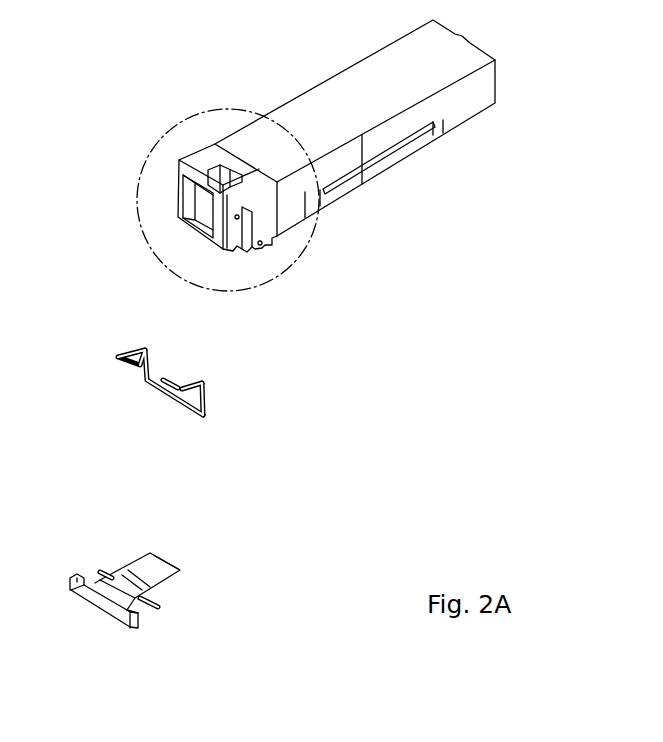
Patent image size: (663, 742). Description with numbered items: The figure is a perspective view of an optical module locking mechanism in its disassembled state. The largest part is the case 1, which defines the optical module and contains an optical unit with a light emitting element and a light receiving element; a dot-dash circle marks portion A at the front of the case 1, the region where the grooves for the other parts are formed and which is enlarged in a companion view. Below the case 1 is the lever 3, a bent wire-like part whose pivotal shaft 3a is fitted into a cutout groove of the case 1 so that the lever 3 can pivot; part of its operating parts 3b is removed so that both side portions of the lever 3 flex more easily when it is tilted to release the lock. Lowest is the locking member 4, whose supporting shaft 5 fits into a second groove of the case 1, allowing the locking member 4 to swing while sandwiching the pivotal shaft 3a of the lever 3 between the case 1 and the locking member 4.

The case 1 is at (333, 80).
The portion A of the case A is at (262, 283).
The lever 3 is at (165, 407).
The pivotal shaft 3a is at (193, 417).
The operating parts 3b is at (118, 357).
The locking member 4 is at (110, 553).
The supporting shaft 5 is at (160, 603).